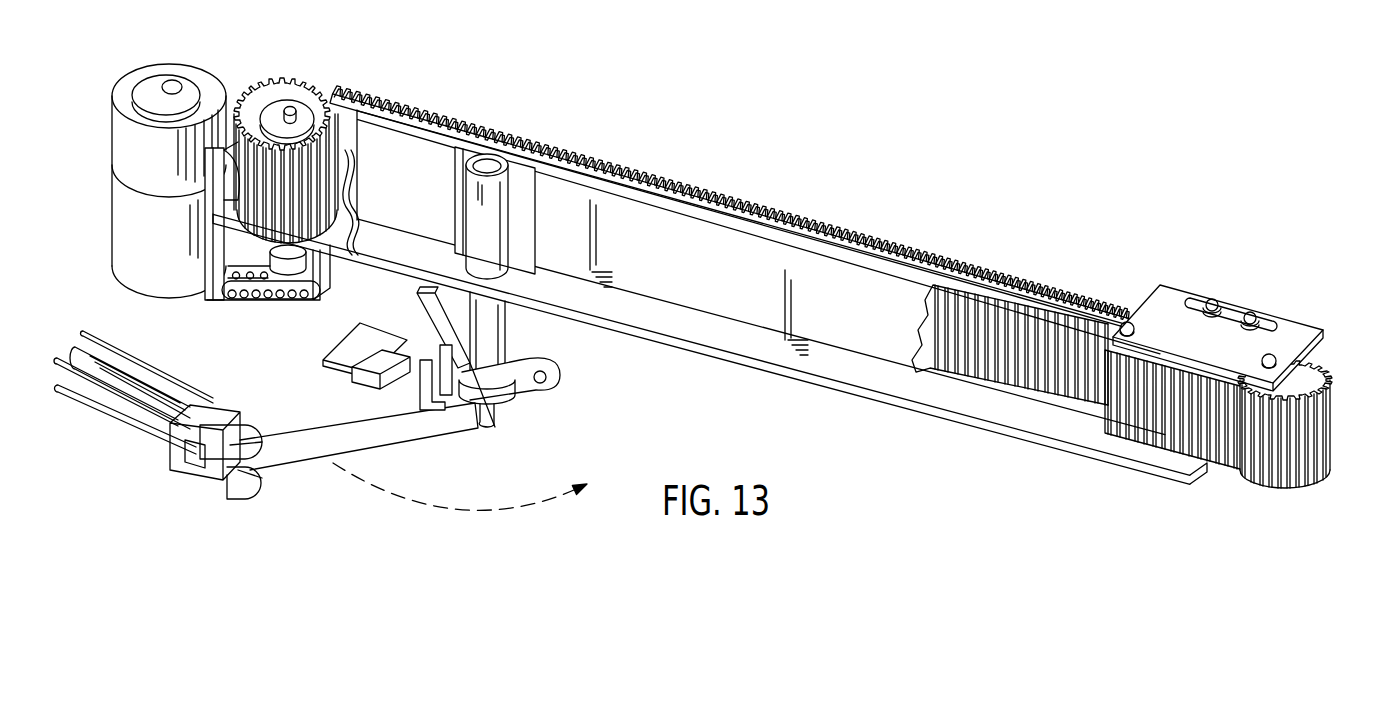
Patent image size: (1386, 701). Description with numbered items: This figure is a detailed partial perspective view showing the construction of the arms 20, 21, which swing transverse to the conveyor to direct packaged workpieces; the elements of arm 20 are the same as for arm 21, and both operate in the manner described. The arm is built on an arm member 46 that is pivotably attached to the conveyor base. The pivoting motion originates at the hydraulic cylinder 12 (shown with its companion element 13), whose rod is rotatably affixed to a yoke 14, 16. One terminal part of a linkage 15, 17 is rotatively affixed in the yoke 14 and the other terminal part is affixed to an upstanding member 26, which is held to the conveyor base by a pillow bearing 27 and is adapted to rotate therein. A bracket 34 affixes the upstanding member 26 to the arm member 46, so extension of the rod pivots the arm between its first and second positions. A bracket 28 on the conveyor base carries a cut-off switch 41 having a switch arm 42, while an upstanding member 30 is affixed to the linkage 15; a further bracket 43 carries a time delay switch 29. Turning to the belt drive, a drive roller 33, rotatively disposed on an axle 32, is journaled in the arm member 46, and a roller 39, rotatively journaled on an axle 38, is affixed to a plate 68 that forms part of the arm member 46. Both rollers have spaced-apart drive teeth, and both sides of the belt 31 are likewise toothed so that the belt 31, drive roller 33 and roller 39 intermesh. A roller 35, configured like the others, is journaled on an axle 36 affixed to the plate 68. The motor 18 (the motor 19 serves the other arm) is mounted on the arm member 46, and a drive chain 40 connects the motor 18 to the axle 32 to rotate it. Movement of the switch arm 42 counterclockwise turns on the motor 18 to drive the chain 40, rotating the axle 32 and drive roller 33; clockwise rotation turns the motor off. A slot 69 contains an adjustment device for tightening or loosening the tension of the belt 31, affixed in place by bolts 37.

The hydraulic cylinder 12 is at (147, 405).
The guide rail 13 is at (116, 414).
The yoke 14 is at (251, 442).
The pivot hinge 16 is at (240, 438).
The linkage 15 is at (359, 441).
The pivot arm 17 is at (372, 448).
The motor 18 is at (169, 181).
The motor 19 is at (118, 229).
The arm 20 is at (710, 242).
The arm 21 is at (710, 242).
The upstanding member 26 is at (506, 327).
The pillow bearing 27 is at (510, 406).
The bracket 28 is at (430, 322).
The time delay switch 29 is at (372, 383).
The upstanding member 30 is at (432, 395).
The belt 31 is at (345, 88).
The axle 32 is at (291, 107).
The drive roller 33 is at (286, 144).
The bracket 34 is at (467, 244).
The roller 35 is at (1120, 352).
The axle 36 is at (1134, 326).
The bolts 37 is at (1250, 312).
The axle 38 is at (1301, 389).
The roller 39 is at (1318, 380).
The drive chain 40 is at (241, 300).
The cut-off switch 41 is at (515, 405).
The switch arm 42 is at (497, 426).
The bracket 43 is at (349, 353).
The arm member 46 is at (677, 264).
The plate 68 is at (1218, 322).
The slot 69 is at (1270, 354).